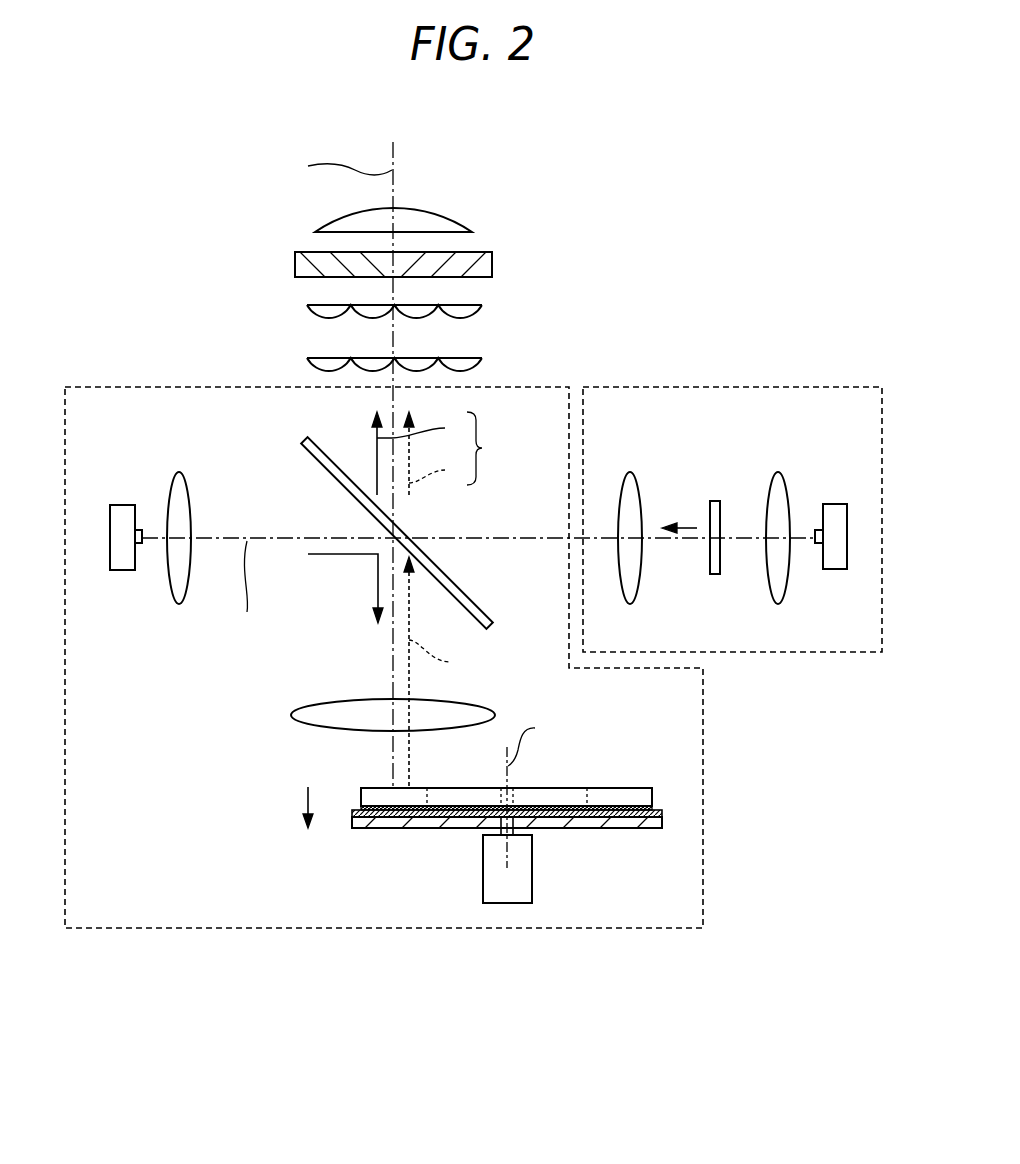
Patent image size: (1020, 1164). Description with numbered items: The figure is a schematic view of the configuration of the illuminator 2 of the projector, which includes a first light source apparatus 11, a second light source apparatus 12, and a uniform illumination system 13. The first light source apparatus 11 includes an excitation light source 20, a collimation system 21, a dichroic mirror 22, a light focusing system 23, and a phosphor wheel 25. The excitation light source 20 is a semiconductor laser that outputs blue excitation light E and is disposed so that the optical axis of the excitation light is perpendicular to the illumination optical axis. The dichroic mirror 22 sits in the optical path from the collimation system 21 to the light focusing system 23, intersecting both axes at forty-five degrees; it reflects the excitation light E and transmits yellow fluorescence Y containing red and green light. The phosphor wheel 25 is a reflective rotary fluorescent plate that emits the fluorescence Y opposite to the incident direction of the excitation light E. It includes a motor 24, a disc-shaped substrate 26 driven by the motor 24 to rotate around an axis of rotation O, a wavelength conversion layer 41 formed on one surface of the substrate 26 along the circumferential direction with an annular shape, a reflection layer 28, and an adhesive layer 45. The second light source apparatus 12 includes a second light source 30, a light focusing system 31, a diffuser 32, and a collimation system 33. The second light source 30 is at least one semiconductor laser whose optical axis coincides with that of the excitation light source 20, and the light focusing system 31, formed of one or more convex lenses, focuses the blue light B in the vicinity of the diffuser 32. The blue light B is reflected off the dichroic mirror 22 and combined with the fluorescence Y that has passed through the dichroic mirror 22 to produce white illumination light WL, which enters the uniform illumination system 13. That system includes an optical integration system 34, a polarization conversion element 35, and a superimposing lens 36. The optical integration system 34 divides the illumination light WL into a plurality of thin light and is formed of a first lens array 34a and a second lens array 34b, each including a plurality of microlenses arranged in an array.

The illuminator 2 is at (724, 180).
The first light source apparatus 11 is at (703, 903).
The second light source apparatus 12 is at (835, 653).
The uniform illumination system 13 is at (186, 203).
The excitation light source 20 is at (123, 496).
The collimation system 21 is at (188, 470).
The dichroic mirror 22 is at (478, 603).
The light focusing system 23 is at (300, 722).
The motor 24 is at (532, 878).
The phosphor wheel 25 is at (753, 733).
The substrate 26 is at (662, 824).
The reflection layer 28 is at (662, 814).
The second light source 30 is at (832, 494).
The light focusing system 31 is at (780, 472).
The diffuser 32 is at (716, 501).
The collimation system 33 is at (630, 472).
The optical integration system 34 is at (234, 283).
The first lens array 34a is at (307, 360).
The second lens array 34b is at (307, 308).
The polarization conversion element 35 is at (295, 265).
The superimposing lens 36 is at (315, 228).
The wavelength conversion layer 41 is at (648, 797).
The adhesive layer 45 is at (652, 808).